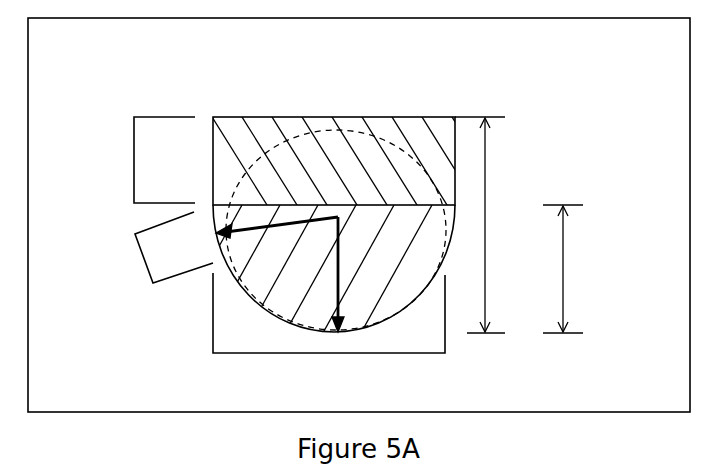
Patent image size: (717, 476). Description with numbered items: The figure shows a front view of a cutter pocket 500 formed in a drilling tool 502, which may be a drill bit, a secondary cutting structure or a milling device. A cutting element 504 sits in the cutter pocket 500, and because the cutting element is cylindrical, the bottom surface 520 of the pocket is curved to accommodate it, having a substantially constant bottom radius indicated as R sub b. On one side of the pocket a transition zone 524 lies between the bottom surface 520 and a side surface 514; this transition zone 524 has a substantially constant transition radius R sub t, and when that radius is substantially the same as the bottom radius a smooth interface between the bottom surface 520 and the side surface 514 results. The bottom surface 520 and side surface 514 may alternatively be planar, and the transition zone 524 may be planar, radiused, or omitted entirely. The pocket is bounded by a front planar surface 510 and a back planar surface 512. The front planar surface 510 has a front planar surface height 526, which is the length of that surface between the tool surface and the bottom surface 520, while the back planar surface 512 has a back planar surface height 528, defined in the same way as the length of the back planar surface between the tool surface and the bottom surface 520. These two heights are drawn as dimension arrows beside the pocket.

The cutter pocket 500 is at (353, 185).
The drilling tool 502 is at (353, 165).
The cutting element 504 is at (397, 143).
The front planar surface 510 is at (397, 283).
The back planar surface 512 is at (250, 140).
The side surface 514 is at (130, 160).
The bottom surface 520 is at (329, 330).
The transition zone 524 is at (149, 247).
The front planar surface height 526 is at (563, 272).
The back planar surface height 528 is at (485, 165).